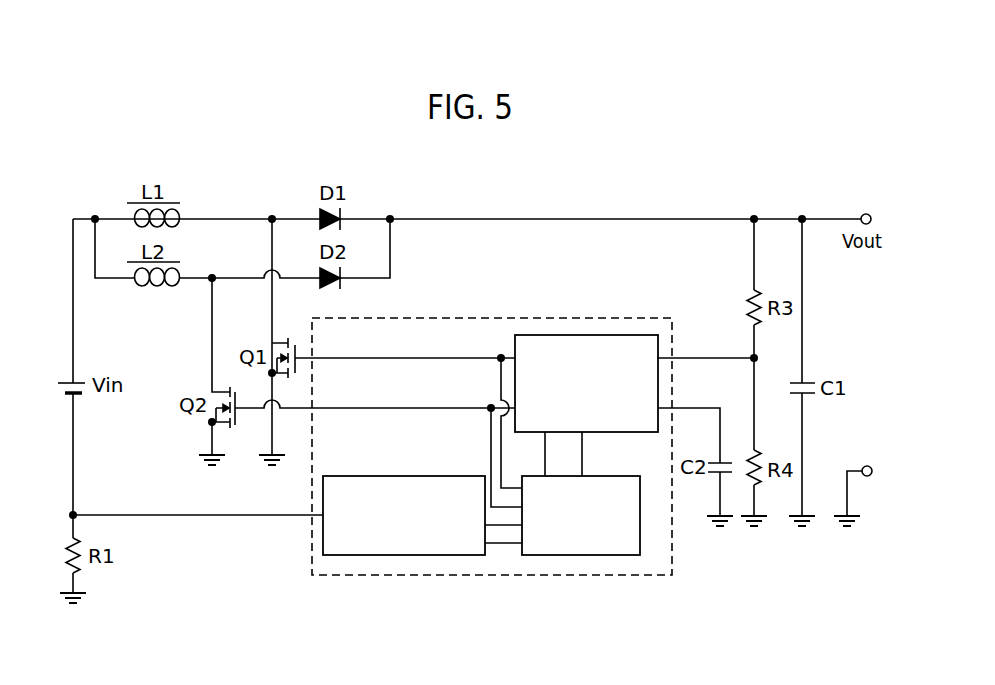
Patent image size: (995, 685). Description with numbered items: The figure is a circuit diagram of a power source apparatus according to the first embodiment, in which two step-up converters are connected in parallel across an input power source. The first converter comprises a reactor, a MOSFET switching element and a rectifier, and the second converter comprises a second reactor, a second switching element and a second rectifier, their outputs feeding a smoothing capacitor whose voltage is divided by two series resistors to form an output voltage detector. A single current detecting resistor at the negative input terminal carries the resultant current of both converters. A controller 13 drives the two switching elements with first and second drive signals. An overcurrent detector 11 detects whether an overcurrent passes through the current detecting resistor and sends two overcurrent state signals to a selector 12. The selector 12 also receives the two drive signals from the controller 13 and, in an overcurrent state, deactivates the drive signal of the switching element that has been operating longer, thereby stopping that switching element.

The overcurrent detector 11 is at (362, 556).
The selector 12 is at (567, 556).
The controller 13 is at (572, 335).